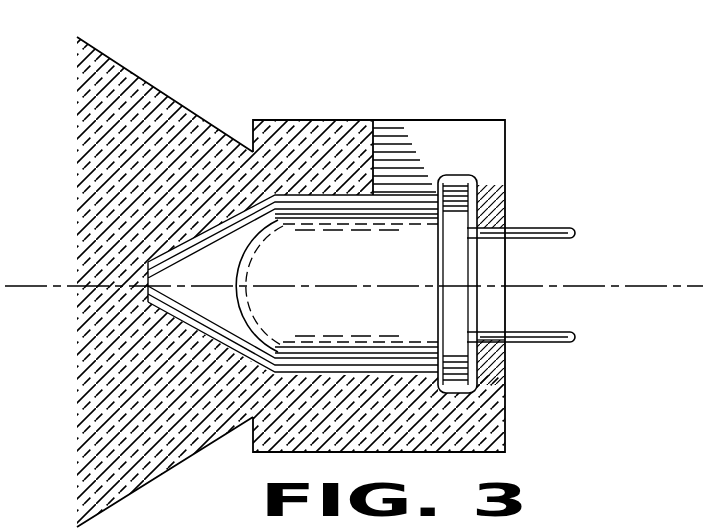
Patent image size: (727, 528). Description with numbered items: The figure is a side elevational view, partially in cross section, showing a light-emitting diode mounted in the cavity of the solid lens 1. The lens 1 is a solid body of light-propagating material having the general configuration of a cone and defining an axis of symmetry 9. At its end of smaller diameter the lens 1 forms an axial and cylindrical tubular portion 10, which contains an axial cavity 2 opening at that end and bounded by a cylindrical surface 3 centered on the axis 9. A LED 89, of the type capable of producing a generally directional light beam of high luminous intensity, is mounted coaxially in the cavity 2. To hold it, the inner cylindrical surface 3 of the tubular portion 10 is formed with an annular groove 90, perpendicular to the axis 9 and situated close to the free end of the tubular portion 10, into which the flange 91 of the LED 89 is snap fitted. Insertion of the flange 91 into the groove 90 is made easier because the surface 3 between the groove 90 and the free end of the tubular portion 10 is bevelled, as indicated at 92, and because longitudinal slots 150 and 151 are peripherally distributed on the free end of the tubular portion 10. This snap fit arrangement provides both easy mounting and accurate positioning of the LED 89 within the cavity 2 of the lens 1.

The solid lens 1 is at (160, 72).
The axial cavity 2 is at (290, 200).
The cylindrical surface 3 is at (330, 368).
The axis of symmetry 9 is at (664, 283).
The tubular portion 10 is at (353, 167).
The LED 89 is at (400, 222).
The annular groove 90 is at (450, 395).
The flange 91 is at (462, 380).
The bevelled surface 92 is at (500, 200).
The longitudinal slot 150 is at (485, 152).
The longitudinal slot 151 is at (487, 326).